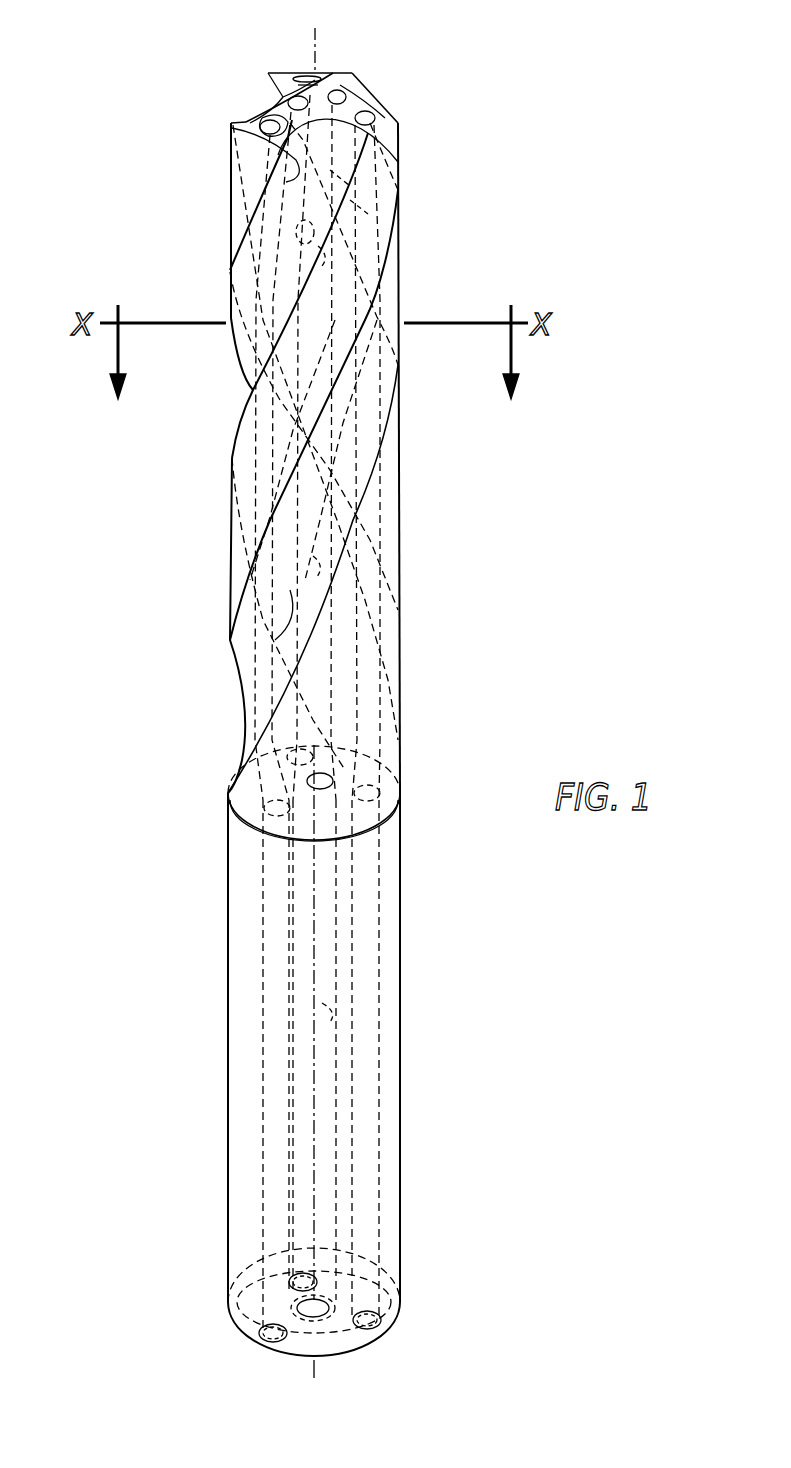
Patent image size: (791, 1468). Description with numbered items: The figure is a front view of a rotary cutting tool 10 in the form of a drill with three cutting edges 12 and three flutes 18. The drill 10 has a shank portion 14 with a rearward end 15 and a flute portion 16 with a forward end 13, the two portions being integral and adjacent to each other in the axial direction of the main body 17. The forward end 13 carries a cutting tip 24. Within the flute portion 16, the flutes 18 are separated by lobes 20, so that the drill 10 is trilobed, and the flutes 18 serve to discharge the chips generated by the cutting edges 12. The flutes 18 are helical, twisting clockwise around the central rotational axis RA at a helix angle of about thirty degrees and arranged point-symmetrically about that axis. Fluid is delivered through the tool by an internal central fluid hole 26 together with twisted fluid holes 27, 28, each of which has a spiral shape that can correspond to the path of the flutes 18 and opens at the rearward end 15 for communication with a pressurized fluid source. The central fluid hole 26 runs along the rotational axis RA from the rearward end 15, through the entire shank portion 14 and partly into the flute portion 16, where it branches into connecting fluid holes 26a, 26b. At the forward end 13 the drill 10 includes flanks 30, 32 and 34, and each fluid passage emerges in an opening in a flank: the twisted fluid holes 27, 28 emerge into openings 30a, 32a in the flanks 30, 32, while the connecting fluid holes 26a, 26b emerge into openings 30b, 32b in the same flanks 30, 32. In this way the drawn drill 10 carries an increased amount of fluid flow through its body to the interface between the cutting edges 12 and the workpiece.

The rotary cutting tool 10 is at (604, 104).
The cutting edge 12 is at (275, 108).
The forward end 13 is at (212, 52).
The shank portion 14 is at (443, 1137).
The rearward end 15 is at (270, 1358).
The flute portion 16 is at (482, 268).
The main body 17 is at (287, 606).
The flute 18 is at (255, 340).
The lobe 20 is at (229, 199).
The cutting tip 24 is at (319, 80).
The central fluid hole 26 is at (313, 556).
The connecting fluid hole 26a is at (318, 252).
The connecting fluid hole 26b is at (345, 178).
The twisted fluid hole 27 is at (300, 225).
The twisted fluid hole 28 is at (362, 207).
The flank 30 is at (248, 130).
The opening 30a is at (267, 121).
The opening 30b is at (297, 97).
The flank 32 is at (395, 110).
The opening 32a is at (370, 114).
The opening 32b is at (342, 93).
The flank 34 is at (283, 95).
The rotational axis RA is at (311, 40).